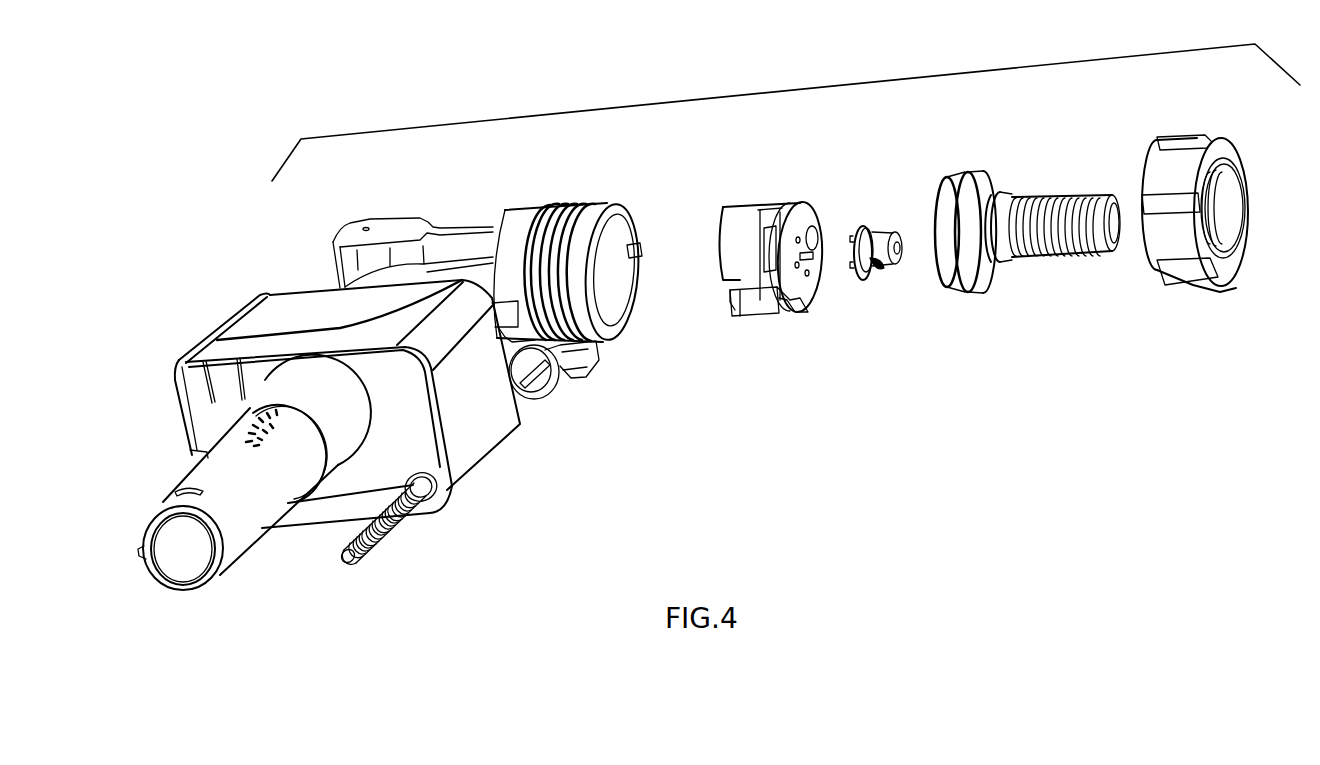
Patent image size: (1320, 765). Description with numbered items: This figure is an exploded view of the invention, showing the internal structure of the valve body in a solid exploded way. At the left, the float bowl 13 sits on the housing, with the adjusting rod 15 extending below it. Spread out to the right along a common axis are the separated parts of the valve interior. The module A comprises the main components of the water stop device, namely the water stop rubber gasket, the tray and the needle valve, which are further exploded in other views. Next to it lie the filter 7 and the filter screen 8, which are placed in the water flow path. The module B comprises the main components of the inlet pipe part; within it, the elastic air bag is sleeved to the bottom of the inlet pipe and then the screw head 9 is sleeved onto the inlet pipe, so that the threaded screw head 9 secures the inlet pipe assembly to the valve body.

The float bowl 13 is at (253, 325).
The adjusting rod 15 is at (383, 545).
The module A is at (759, 208).
The filter 7 is at (863, 223).
The filter screen 8 is at (880, 265).
The screw head 9 is at (1088, 197).
The module B is at (1002, 278).